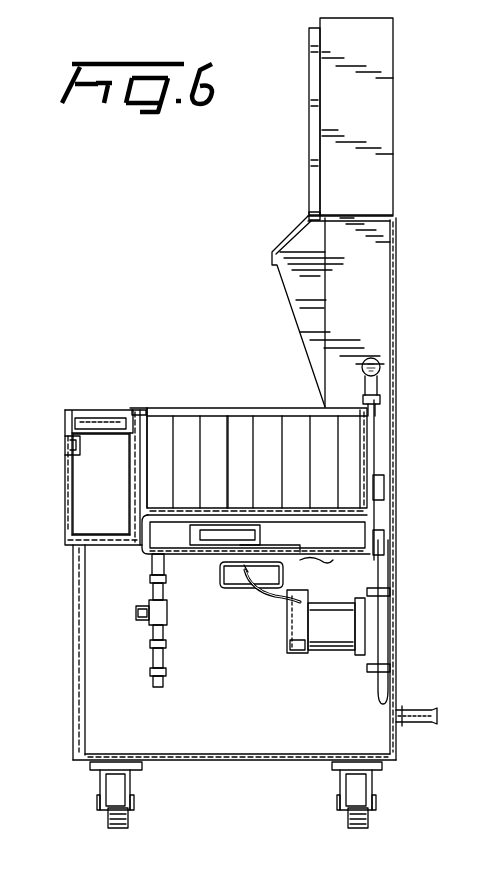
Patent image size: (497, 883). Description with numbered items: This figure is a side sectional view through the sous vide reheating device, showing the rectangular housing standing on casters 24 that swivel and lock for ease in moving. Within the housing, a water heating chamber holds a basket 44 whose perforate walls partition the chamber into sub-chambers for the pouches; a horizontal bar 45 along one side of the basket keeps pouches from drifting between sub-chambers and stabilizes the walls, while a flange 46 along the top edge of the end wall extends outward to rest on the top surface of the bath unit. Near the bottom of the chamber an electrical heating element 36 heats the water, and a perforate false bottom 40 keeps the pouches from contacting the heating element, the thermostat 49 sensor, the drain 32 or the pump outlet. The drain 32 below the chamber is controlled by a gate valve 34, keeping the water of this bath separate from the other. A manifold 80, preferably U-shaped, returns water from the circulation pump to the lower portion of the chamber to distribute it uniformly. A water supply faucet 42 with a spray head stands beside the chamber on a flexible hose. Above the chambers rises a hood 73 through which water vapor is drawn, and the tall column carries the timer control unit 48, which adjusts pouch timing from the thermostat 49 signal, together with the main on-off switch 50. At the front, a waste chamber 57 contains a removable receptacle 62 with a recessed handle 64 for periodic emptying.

The casters 24 is at (134, 788).
The drain 32 is at (152, 568).
The gate valve 34 is at (147, 620).
The electrical heating element 36 is at (215, 566).
The perforate false bottom 40 is at (177, 522).
The water supply faucet 42 is at (368, 395).
The basket 44 is at (205, 410).
The horizontal bar 45 is at (240, 414).
The flange 46 is at (140, 412).
The timer control unit 48 is at (309, 70).
The thermostat 49 is at (297, 608).
The main on-off switch 50 is at (320, 116).
The waste chamber 57 is at (103, 470).
The removable receptacle 62 is at (65, 500).
The recessed handle 64 is at (65, 448).
The hood 73 is at (290, 232).
The manifold 80 is at (333, 560).